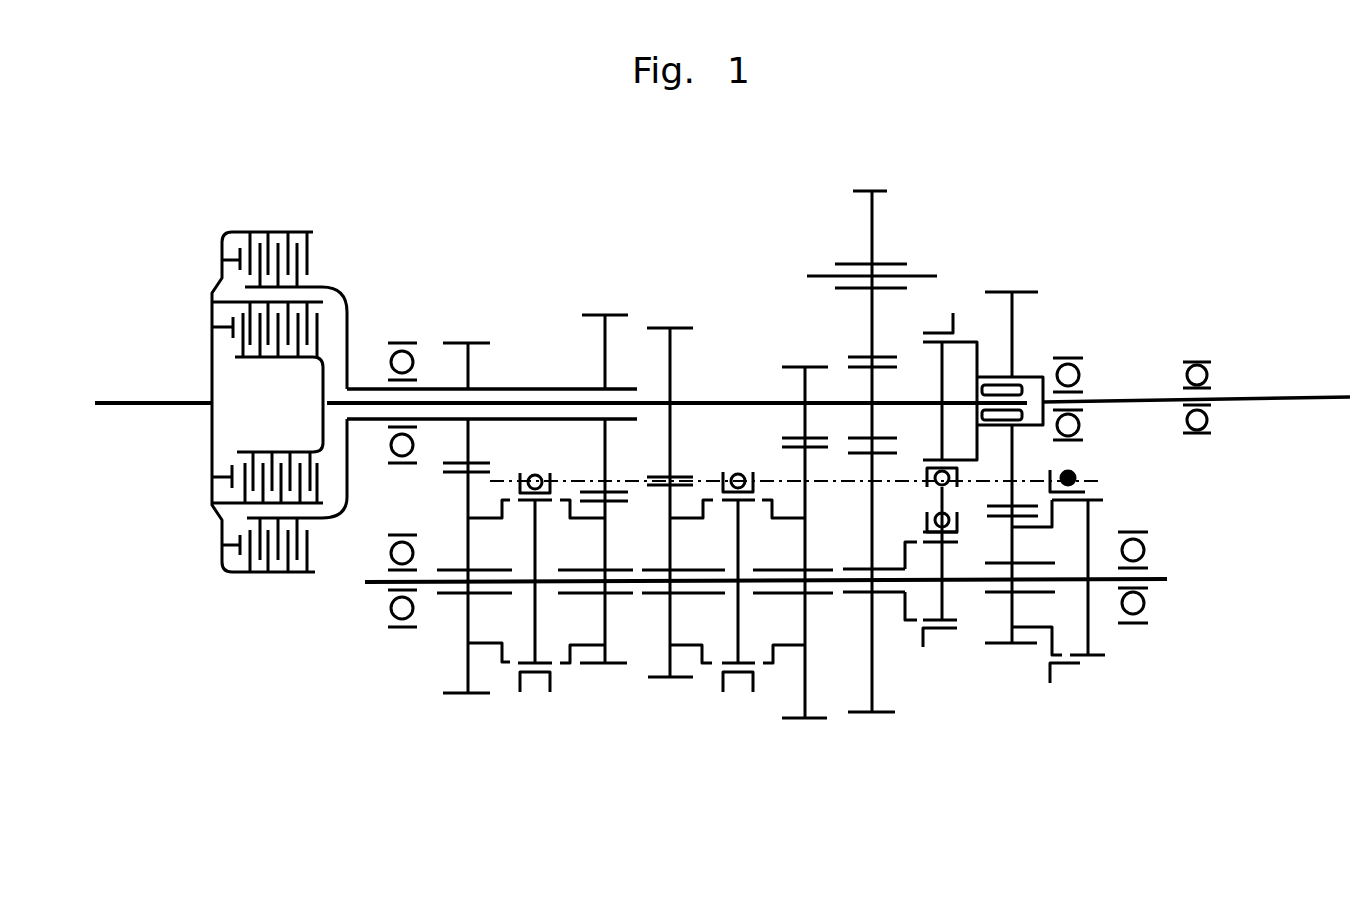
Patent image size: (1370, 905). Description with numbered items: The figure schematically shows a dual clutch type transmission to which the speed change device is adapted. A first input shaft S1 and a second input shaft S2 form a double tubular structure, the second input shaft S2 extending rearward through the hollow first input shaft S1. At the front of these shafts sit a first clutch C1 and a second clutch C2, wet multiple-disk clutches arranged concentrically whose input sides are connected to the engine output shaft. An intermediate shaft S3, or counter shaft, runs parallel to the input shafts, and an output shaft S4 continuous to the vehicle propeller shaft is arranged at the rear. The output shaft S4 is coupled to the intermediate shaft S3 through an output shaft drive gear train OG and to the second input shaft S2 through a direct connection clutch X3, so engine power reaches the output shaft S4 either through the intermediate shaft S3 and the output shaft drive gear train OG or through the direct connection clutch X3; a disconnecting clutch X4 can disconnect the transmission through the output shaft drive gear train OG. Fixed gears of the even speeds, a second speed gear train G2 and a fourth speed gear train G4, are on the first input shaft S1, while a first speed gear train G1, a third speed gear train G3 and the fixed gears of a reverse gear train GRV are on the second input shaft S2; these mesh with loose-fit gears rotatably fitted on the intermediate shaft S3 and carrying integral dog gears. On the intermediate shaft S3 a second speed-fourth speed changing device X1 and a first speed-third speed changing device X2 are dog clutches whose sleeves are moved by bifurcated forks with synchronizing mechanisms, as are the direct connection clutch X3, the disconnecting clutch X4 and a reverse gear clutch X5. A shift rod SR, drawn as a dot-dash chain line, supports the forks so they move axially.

The first clutch C1 is at (302, 232).
The second clutch C2 is at (250, 323).
The first input shaft S1 is at (528, 389).
The second input shaft S2 is at (720, 403).
The intermediate shaft S3 is at (375, 583).
The output shaft S4 is at (1248, 398).
The first speed gear train G1 is at (797, 722).
The second speed gear train G2 is at (453, 697).
The third speed gear train G3 is at (660, 680).
The fourth speed gear train G4 is at (588, 667).
The reverse gear train GRV is at (863, 713).
The output shaft drive gear train OG is at (993, 645).
The second speed-fourth speed changing device X1 is at (530, 687).
The first speed-third speed changing device X2 is at (735, 683).
The direct connection clutch X3 is at (944, 315).
The disconnecting clutch X4 is at (1068, 665).
The reverse gear clutch X5 is at (935, 630).
The shift rod SR is at (1092, 477).